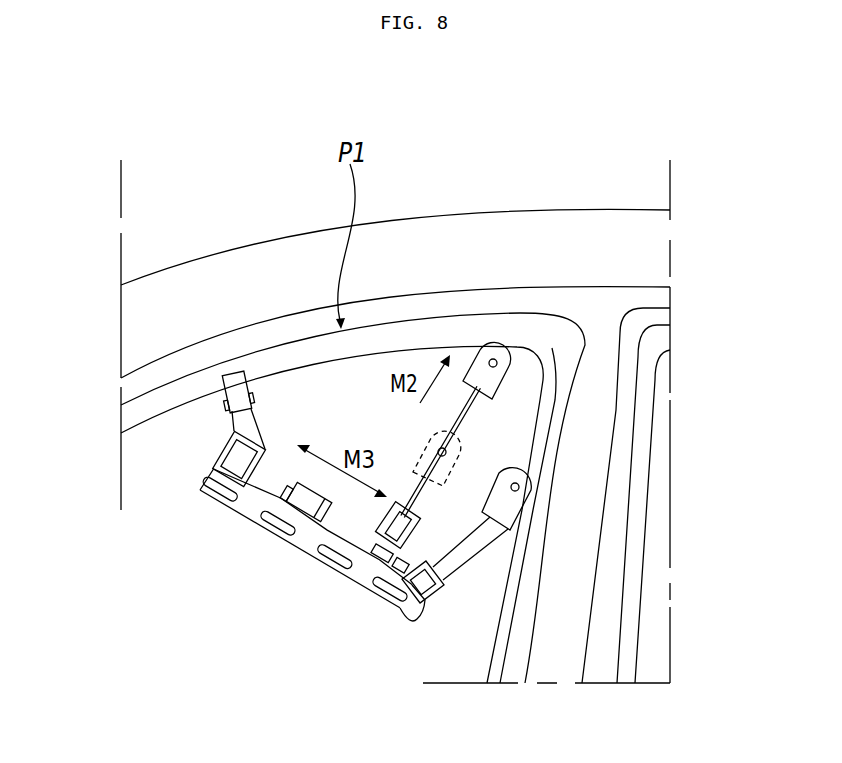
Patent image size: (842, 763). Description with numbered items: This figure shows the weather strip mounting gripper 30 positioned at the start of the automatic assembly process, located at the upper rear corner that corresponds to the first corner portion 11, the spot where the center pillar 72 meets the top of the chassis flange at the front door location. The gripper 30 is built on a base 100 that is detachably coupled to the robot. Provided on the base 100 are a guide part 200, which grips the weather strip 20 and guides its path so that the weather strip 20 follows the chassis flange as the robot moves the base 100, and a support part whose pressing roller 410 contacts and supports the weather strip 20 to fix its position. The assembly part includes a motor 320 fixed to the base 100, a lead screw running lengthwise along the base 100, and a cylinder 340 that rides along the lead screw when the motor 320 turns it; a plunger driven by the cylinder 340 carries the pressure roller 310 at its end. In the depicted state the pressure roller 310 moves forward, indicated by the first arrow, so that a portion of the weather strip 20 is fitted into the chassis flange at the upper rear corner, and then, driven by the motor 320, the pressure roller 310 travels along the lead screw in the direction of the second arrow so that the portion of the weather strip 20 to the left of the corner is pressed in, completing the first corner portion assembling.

The first corner portion 11 is at (549, 330).
The weather strip 20 is at (400, 352).
The weather strip mounting gripper 30 is at (409, 437).
The center pillar 72 is at (560, 607).
The base 100 is at (252, 512).
The guide part 200 is at (507, 505).
The pressure roller 310 is at (463, 450).
The motor 320 is at (222, 467).
The cylinder 340 is at (383, 520).
The pressing roller 410 is at (235, 385).